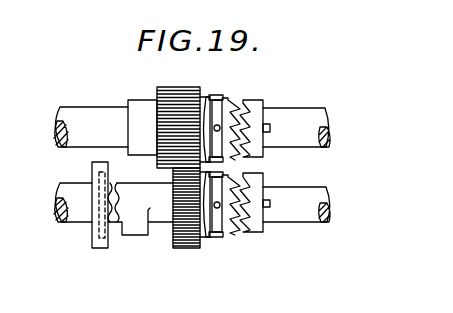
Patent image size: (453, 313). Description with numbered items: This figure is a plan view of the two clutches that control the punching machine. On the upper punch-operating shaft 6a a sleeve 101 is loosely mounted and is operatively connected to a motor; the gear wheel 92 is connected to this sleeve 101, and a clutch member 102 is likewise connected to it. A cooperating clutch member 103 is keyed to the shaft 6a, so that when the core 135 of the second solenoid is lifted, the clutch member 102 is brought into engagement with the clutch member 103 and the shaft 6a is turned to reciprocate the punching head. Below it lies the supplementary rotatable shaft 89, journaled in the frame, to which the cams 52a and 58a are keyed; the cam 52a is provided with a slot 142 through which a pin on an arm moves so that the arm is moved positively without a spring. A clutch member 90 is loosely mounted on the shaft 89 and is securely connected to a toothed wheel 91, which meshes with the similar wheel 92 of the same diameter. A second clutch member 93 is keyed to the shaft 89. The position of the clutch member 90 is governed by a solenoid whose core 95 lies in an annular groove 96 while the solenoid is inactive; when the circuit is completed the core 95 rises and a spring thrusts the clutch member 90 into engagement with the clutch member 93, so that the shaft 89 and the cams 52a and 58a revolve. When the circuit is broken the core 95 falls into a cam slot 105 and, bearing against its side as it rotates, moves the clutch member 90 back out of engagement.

The punch-operating shaft 6a is at (95, 107).
The sleeve 101 is at (141, 102).
The gear wheel 92 is at (182, 91).
The clutch member 102 is at (231, 100).
The clutch member 103 is at (258, 106).
The solenoid core 135 is at (219, 130).
The supplementary rotatable shaft 89 is at (76, 190).
The slot 142 is at (92, 237).
The cam 52a is at (100, 244).
The cam 58a is at (140, 230).
The toothed wheel 91 is at (186, 248).
The annular groove 96 is at (223, 236).
The cam slot 105 is at (226, 222).
The solenoid core 95 is at (219, 207).
The clutch member 90 is at (255, 190).
The clutch member 93 is at (255, 190).